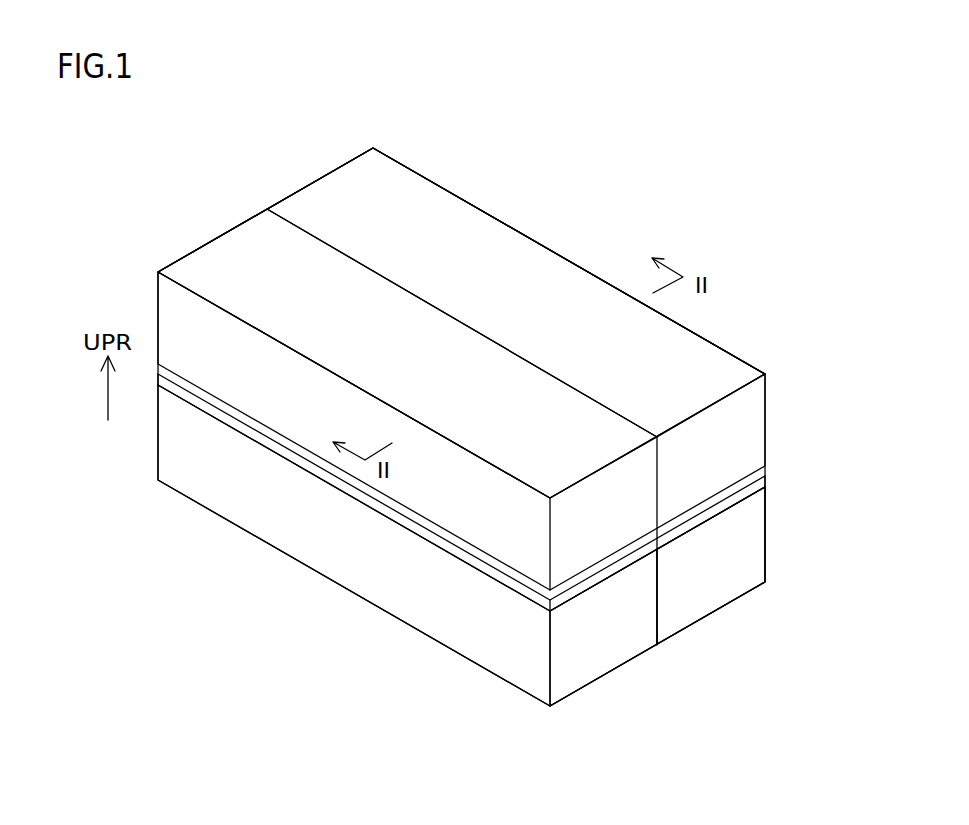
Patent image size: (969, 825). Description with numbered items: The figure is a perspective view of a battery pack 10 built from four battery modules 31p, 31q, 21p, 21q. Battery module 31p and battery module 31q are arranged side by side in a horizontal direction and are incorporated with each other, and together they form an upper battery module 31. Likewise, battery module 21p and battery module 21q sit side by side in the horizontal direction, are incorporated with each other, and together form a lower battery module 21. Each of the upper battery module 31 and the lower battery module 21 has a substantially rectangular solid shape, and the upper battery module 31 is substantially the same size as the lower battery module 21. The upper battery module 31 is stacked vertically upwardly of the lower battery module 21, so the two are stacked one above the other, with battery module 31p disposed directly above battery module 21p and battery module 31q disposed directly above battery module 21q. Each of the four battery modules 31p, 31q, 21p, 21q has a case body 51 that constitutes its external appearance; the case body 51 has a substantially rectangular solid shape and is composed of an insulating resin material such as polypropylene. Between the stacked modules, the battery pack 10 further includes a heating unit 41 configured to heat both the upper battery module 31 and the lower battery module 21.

The battery pack 10 is at (243, 135).
The lower battery module 21 is at (782, 543).
The battery module 21p is at (610, 650).
The battery module 21q is at (717, 590).
The upper battery module 31 is at (782, 428).
The battery module 31p is at (212, 238).
The battery module 31q is at (320, 178).
The heating unit 41 is at (752, 492).
The case body 51 is at (523, 267).